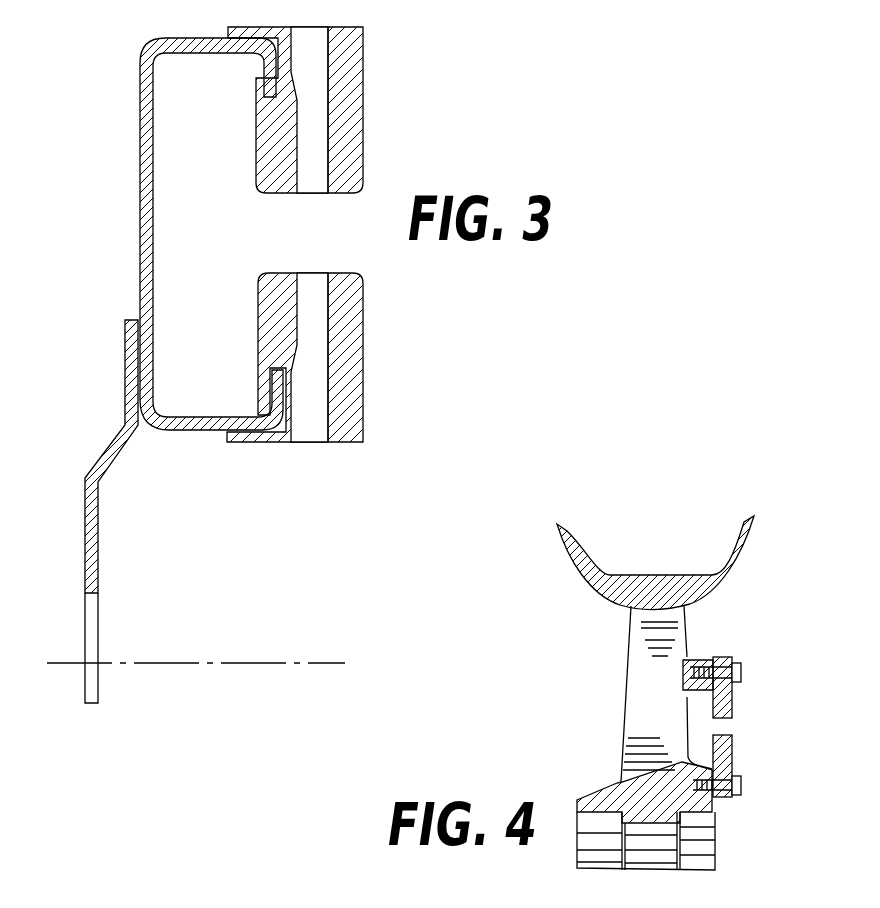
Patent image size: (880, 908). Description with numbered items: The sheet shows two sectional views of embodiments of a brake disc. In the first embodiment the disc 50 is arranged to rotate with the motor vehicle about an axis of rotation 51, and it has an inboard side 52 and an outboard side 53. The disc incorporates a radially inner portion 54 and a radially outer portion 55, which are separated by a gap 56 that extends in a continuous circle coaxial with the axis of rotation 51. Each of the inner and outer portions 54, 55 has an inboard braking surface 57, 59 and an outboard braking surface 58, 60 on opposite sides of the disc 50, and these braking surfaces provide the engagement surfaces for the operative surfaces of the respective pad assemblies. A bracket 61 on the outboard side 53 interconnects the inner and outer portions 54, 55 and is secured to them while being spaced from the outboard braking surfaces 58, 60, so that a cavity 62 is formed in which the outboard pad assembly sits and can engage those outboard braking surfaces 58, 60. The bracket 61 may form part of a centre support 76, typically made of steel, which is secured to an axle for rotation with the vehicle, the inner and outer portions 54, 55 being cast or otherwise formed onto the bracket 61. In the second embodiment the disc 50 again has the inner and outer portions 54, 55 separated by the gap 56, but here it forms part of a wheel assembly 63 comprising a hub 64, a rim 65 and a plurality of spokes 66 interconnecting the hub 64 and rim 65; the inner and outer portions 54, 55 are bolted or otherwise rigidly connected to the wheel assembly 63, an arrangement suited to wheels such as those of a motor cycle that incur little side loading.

In FIG. 3, the disc 50 is at (350, 226).
In FIG. 4, the disc 50 is at (744, 695).
In FIG. 3, the axis of rotation 51 is at (293, 663).
In FIG. 3, the inboard side 52 is at (336, 102).
In FIG. 3, the outboard side 53 is at (243, 150).
In FIG. 3, the radially inner portion 54 is at (325, 357).
In FIG. 4, the radially inner portion 54 is at (733, 758).
In FIG. 3, the radially outer portion 55 is at (350, 162).
In FIG. 4, the radially outer portion 55 is at (735, 700).
In FIG. 3, the gap 56 is at (290, 235).
In FIG. 4, the gap 56 is at (722, 727).
In FIG. 3, the inboard braking surface 57 is at (363, 393).
In FIG. 3, the outboard braking surface 58 is at (258, 345).
In FIG. 3, the inboard braking surface 59 is at (363, 115).
In FIG. 3, the outboard braking surface 60 is at (211, 234).
In FIG. 3, the bracket 61 is at (180, 234).
In FIG. 3, the cavity 62 is at (180, 234).
In FIG. 4, the wheel assembly 63 is at (667, 690).
In FIG. 4, the hub 64 is at (700, 852).
In FIG. 4, the rim 65 is at (617, 576).
In FIG. 4, the spokes 66 is at (650, 658).
In FIG. 3, the centre support 76 is at (88, 540).